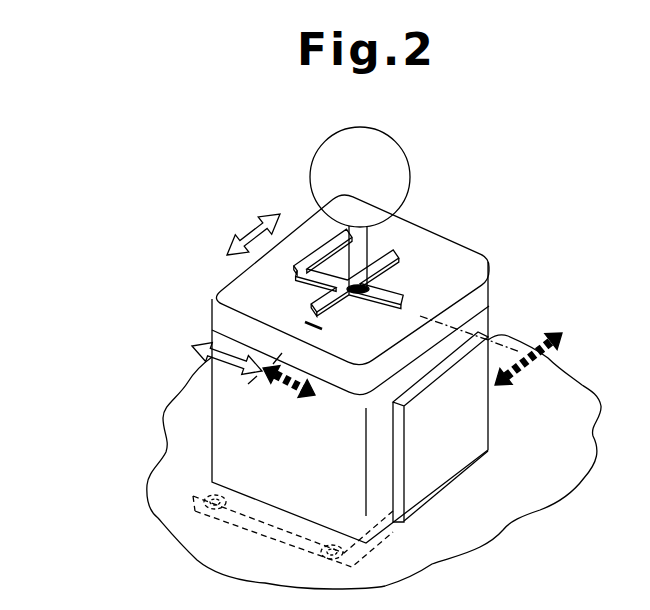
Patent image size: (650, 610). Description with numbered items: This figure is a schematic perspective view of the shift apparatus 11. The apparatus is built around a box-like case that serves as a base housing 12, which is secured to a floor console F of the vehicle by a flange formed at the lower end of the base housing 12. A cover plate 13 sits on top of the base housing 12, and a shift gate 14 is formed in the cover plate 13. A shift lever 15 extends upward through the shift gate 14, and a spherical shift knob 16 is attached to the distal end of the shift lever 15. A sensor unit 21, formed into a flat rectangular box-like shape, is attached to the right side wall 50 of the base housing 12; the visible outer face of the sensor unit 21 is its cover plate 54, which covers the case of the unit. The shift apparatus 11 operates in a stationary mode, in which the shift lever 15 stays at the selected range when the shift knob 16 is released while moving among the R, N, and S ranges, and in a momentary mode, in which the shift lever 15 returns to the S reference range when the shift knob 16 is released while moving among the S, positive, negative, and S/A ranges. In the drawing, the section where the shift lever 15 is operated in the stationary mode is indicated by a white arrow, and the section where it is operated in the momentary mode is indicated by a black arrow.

The shift apparatus 11 is at (123, 198).
The base housing 12 is at (210, 453).
The cover plate 13 is at (228, 287).
The shift gate 14 is at (316, 277).
The shift lever 15 is at (369, 240).
The shift knob 16 is at (332, 149).
The sensor unit 21 is at (467, 450).
The right side wall 50 is at (383, 512).
The cover plate 54 is at (437, 487).
The floor console F is at (158, 518).